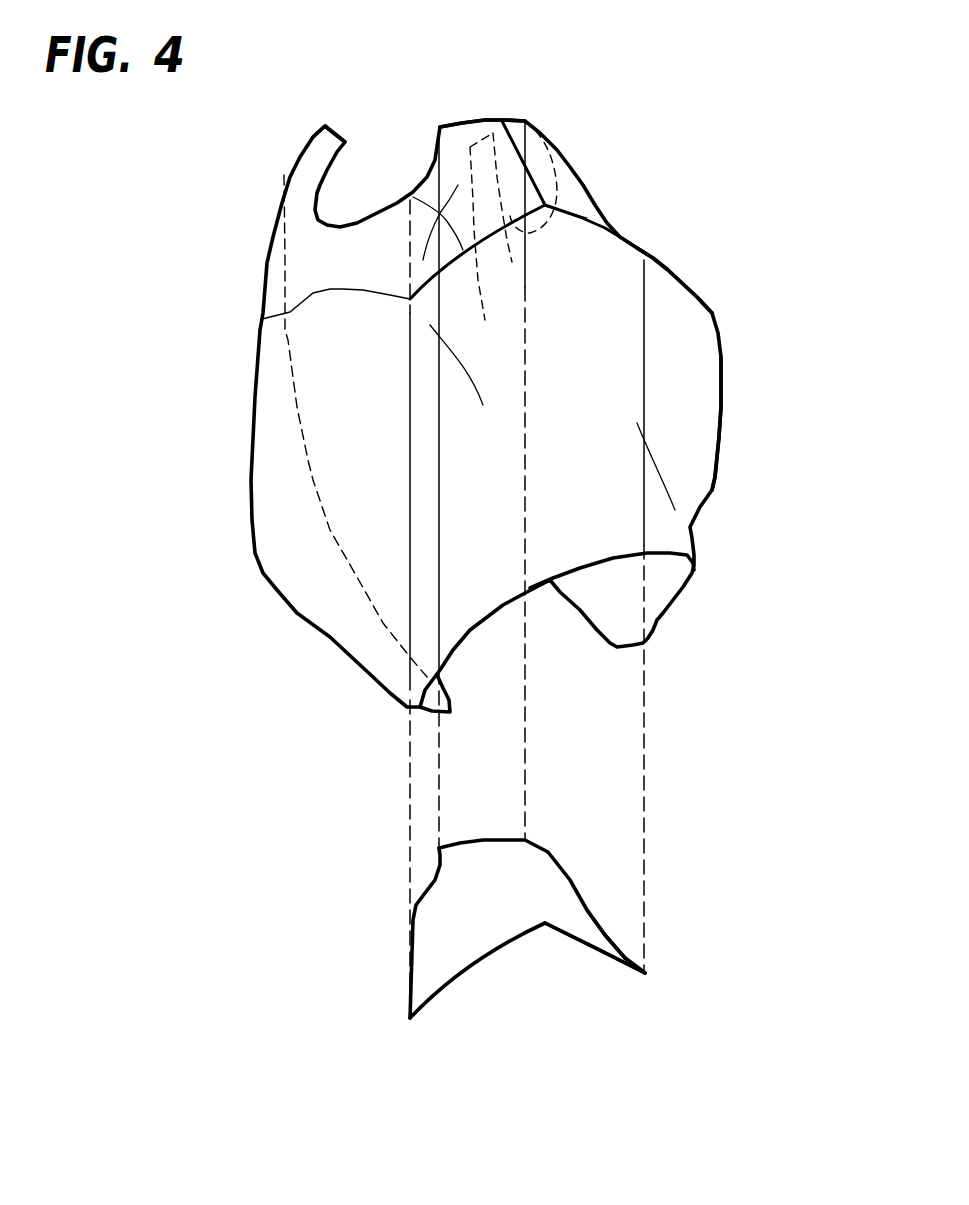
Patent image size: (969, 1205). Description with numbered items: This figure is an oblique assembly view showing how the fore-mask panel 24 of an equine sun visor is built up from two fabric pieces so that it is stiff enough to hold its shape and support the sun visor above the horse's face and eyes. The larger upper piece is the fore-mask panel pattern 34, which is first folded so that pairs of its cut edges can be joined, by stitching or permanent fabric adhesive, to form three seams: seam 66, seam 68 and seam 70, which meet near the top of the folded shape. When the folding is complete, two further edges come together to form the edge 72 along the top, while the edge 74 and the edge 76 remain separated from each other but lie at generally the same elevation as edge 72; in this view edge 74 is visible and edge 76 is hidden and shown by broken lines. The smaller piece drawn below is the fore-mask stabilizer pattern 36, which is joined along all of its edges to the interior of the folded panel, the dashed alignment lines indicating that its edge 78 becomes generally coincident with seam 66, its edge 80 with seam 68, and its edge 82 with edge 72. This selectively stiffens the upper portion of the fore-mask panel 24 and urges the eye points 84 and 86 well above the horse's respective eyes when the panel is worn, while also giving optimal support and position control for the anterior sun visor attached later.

The fore-mask panel 24 is at (762, 275).
The fore-mask panel pattern 34 is at (731, 449).
The fore-mask stabilizer pattern 36 is at (429, 876).
The seam 66 is at (413, 197).
The seam 68 is at (587, 217).
The seam 70 is at (545, 160).
The edge 72 is at (483, 120).
The edge 74 is at (340, 133).
The edge 76 is at (477, 127).
The edge 78 is at (490, 968).
The edge 80 is at (587, 942).
The edge 82 is at (482, 840).
The eye point 84 is at (262, 319).
The eye point 86 is at (655, 260).